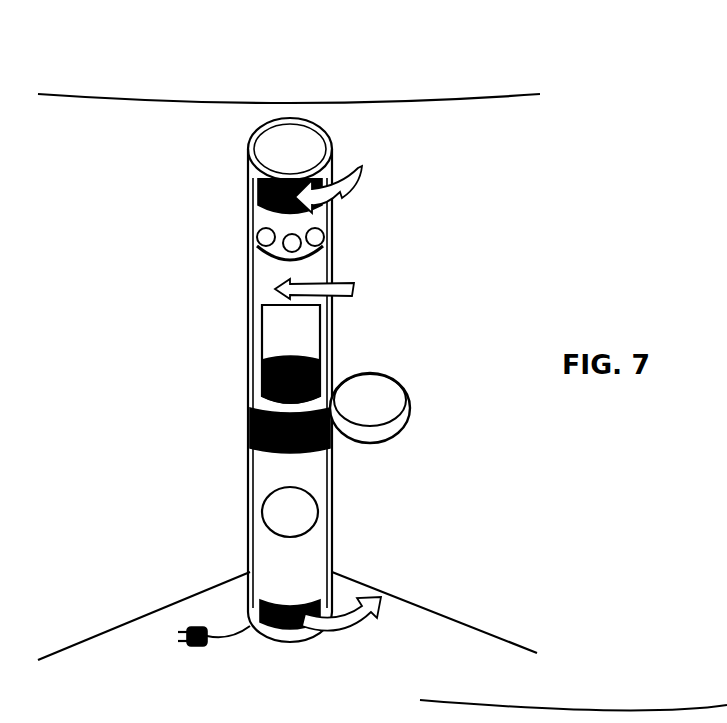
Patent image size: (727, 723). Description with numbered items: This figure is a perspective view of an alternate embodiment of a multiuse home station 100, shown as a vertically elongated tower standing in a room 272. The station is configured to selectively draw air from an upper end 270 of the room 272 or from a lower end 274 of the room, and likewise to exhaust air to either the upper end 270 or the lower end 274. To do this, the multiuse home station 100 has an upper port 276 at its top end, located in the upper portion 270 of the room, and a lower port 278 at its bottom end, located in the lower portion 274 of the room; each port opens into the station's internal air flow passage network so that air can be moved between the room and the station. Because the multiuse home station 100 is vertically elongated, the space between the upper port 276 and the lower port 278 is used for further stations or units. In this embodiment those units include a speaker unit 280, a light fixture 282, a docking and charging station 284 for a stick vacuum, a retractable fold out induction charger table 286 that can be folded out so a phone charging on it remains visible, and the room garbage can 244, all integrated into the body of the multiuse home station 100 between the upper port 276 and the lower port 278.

The multiuse home station 100 is at (198, 181).
The room garbage can 244 is at (248, 500).
The upper end of room 270 is at (452, 180).
The room 272 is at (608, 430).
The lower end of room 274 is at (453, 573).
The upper port 276 is at (281, 184).
The lower port 278 is at (283, 630).
The speaker unit 280 is at (248, 238).
The light fixture 282 is at (354, 283).
The docking and charging station 284 is at (248, 352).
The retractable fold out induction charger table 286 is at (358, 418).